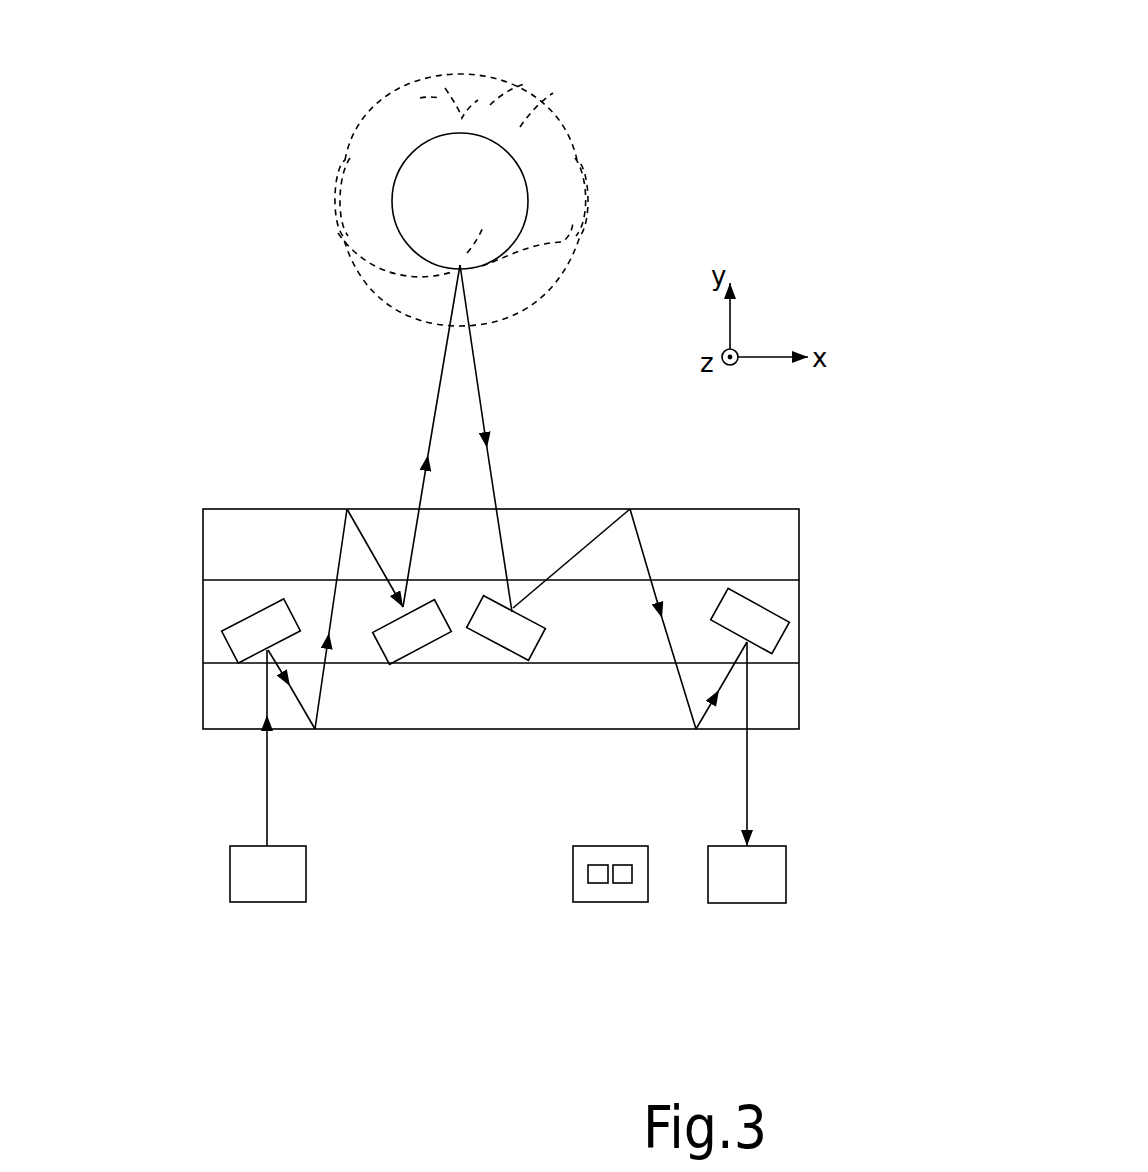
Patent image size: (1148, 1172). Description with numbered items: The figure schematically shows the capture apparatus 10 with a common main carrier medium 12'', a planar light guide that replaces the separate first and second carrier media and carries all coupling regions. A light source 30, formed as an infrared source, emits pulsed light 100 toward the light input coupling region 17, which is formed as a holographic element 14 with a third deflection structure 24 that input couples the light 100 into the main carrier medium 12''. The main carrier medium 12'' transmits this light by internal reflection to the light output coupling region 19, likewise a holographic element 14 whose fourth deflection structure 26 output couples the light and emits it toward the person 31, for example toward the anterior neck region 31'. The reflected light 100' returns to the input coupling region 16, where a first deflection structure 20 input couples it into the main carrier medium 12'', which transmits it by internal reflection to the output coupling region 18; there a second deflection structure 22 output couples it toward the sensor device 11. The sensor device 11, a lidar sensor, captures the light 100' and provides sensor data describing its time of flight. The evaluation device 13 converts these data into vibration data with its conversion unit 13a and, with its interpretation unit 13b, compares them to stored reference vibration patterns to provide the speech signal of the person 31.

The capture apparatus 10 is at (213, 463).
The sensor device 11 is at (762, 880).
The common main carrier medium 12'' is at (501, 635).
The evaluation device 13 is at (612, 855).
The conversion unit 13a is at (600, 883).
The interpretation unit 13b is at (625, 883).
The holographic element 14 is at (588, 627).
The input coupling region 16 is at (517, 580).
The light input coupling region 17 is at (255, 667).
The output coupling region 18 is at (767, 665).
The light output coupling region 19 is at (403, 595).
The first deflection structure 20 is at (492, 645).
The second deflection structure 22 is at (782, 618).
The third deflection structure 24 is at (247, 637).
The fourth deflection structure 26 is at (408, 640).
The light source 30 is at (278, 865).
The person 31 is at (484, 200).
The anterior neck region 31' is at (500, 236).
The light 100 is at (290, 555).
The reflected light 100' is at (662, 536).